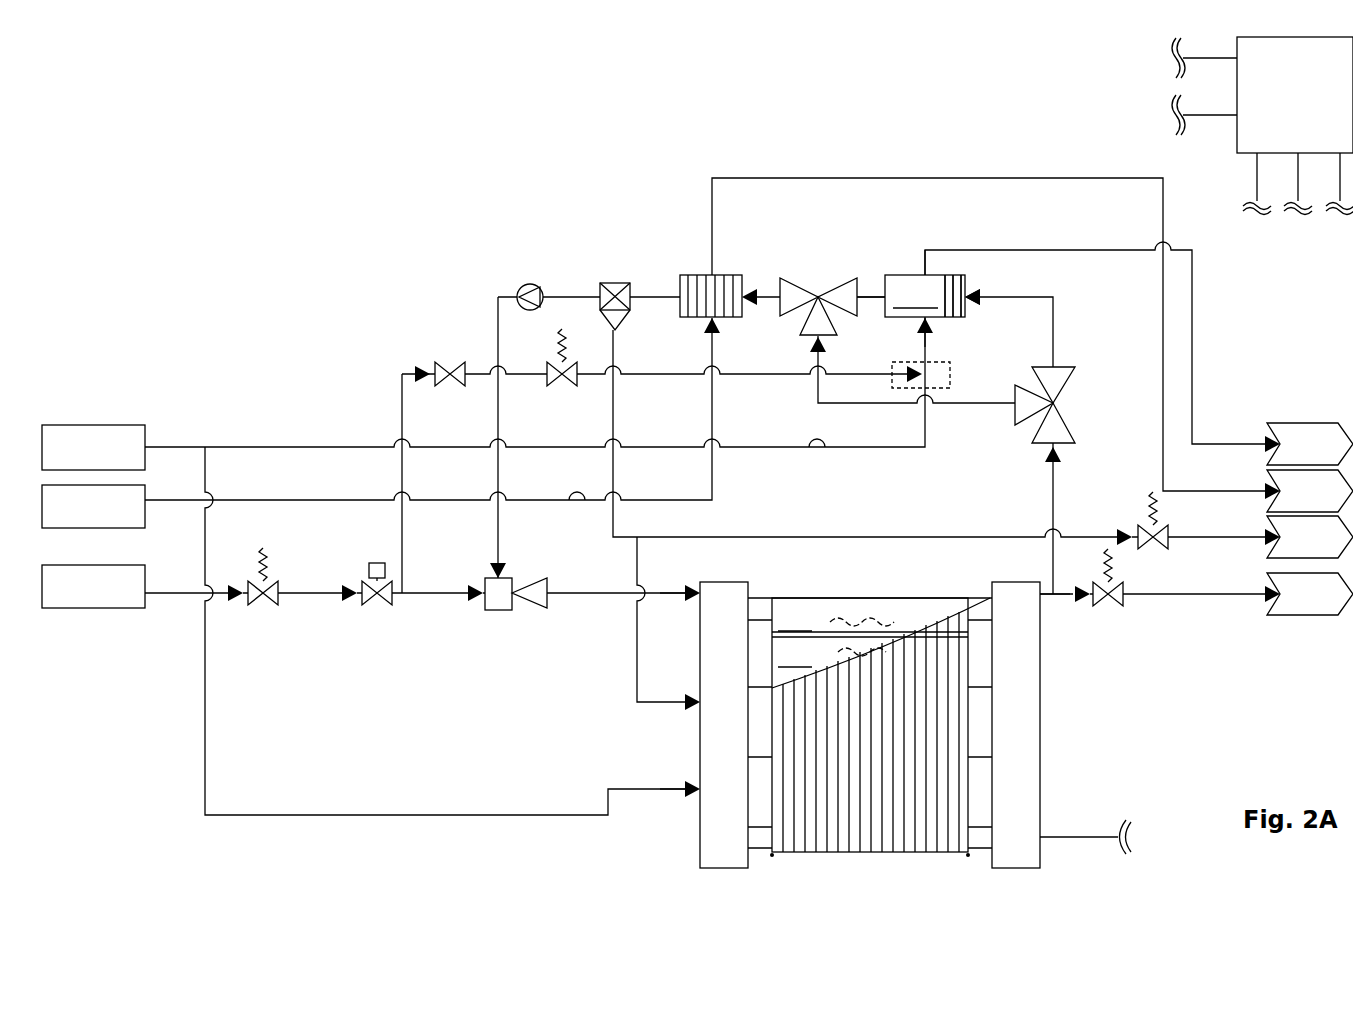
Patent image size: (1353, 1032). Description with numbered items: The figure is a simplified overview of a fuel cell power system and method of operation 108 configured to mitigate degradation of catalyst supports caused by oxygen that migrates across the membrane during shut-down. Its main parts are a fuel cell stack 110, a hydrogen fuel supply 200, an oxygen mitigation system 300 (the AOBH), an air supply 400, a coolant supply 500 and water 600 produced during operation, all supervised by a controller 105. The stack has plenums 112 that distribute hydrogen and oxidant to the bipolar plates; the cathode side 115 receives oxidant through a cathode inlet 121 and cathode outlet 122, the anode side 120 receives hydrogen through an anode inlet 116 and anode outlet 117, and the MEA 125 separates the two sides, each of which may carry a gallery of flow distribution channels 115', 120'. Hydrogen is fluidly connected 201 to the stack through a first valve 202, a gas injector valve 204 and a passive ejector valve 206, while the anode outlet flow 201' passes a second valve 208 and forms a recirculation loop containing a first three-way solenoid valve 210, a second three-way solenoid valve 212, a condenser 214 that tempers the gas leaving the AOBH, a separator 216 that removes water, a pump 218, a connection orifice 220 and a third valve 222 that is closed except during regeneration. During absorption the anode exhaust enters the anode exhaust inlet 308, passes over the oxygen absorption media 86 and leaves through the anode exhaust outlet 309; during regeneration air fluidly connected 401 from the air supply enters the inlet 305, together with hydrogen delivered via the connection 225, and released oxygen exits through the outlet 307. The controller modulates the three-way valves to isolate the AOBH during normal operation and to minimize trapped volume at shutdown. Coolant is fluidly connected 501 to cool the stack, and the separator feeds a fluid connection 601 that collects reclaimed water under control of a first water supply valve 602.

The system and method of operation 108 is at (318, 256).
The controller 105 is at (1216, 150).
The air supply (oxidant) 400 is at (697, 446).
The coolant supply 500 is at (697, 499).
The water 600 is at (1310, 537).
The hydrogen fuel supply 200 is at (697, 590).
The air supply fluid connection 401 is at (1033, 249).
The coolant fluid connection 501 is at (927, 177).
The water fluid connection 601 is at (945, 535).
The hydrogen fluid connection 201 is at (592, 500).
The anode outlet flow 201' is at (853, 439).
The first valve 202 is at (262, 608).
The gas injector valve 204 is at (377, 608).
The passive ejector valve 206 is at (510, 614).
The second valve 208 is at (1112, 605).
The first water supply valve 602 is at (1157, 548).
The connection orifice 220 is at (450, 358).
The third valve 222 is at (560, 388).
The pump 218 is at (528, 281).
The separator 216 is at (613, 280).
The condenser 214 is at (698, 272).
The second three-way solenoid valve 212 is at (800, 276).
The anode exhaust outlet 309 is at (880, 292).
The oxygen mitigation system 300 is at (925, 296).
The outlet 307 is at (918, 273).
The oxygen absorption media 86 is at (958, 274).
The anode exhaust inlet 308 is at (970, 292).
The inlet 305 is at (940, 320).
The connection 225 is at (950, 380).
The first three-way solenoid valve 210 is at (1078, 405).
The plenum 112 is at (720, 866).
The fuel cell stack 110 is at (868, 856).
The cathode side 115 is at (870, 574).
The gallery of flow distribution channels 115' is at (836, 620).
The anode side 120 is at (947, 725).
The gallery of flow distribution channels 120' is at (832, 655).
The MEA 125 is at (897, 633).
The anode inlet 116 is at (696, 600).
The anode outlet 117 is at (1050, 604).
The cathode inlet 121 is at (692, 800).
The cathode outlet 122 is at (1045, 846).